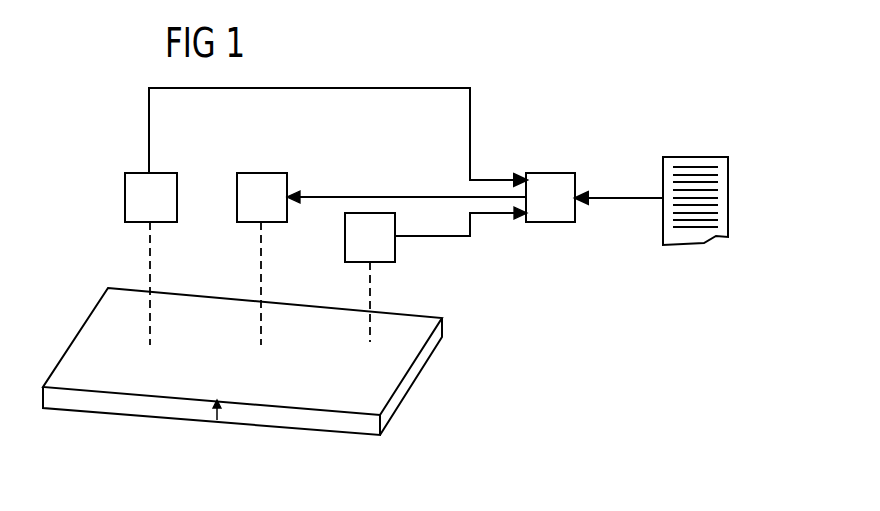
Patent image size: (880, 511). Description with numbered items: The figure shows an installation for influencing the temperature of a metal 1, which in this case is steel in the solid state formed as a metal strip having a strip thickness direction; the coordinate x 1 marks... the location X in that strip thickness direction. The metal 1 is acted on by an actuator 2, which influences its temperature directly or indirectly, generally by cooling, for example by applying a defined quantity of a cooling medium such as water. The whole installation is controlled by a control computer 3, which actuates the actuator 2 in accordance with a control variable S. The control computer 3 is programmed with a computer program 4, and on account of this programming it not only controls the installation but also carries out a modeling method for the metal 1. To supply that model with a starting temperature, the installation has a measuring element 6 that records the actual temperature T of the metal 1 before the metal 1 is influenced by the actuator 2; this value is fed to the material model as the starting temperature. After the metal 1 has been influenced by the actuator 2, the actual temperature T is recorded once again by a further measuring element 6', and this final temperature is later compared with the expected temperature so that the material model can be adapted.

The metal 1 is at (416, 360).
The actuator 2 is at (262, 173).
The control computer 3 is at (551, 173).
The computer program 4 is at (693, 157).
The measuring element 6 is at (127, 259).
The further measuring element 6' is at (346, 277).
The control variable S is at (406, 182).
The actual temperature T is at (340, 178).
The location in the strip thickness direction X is at (217, 420).